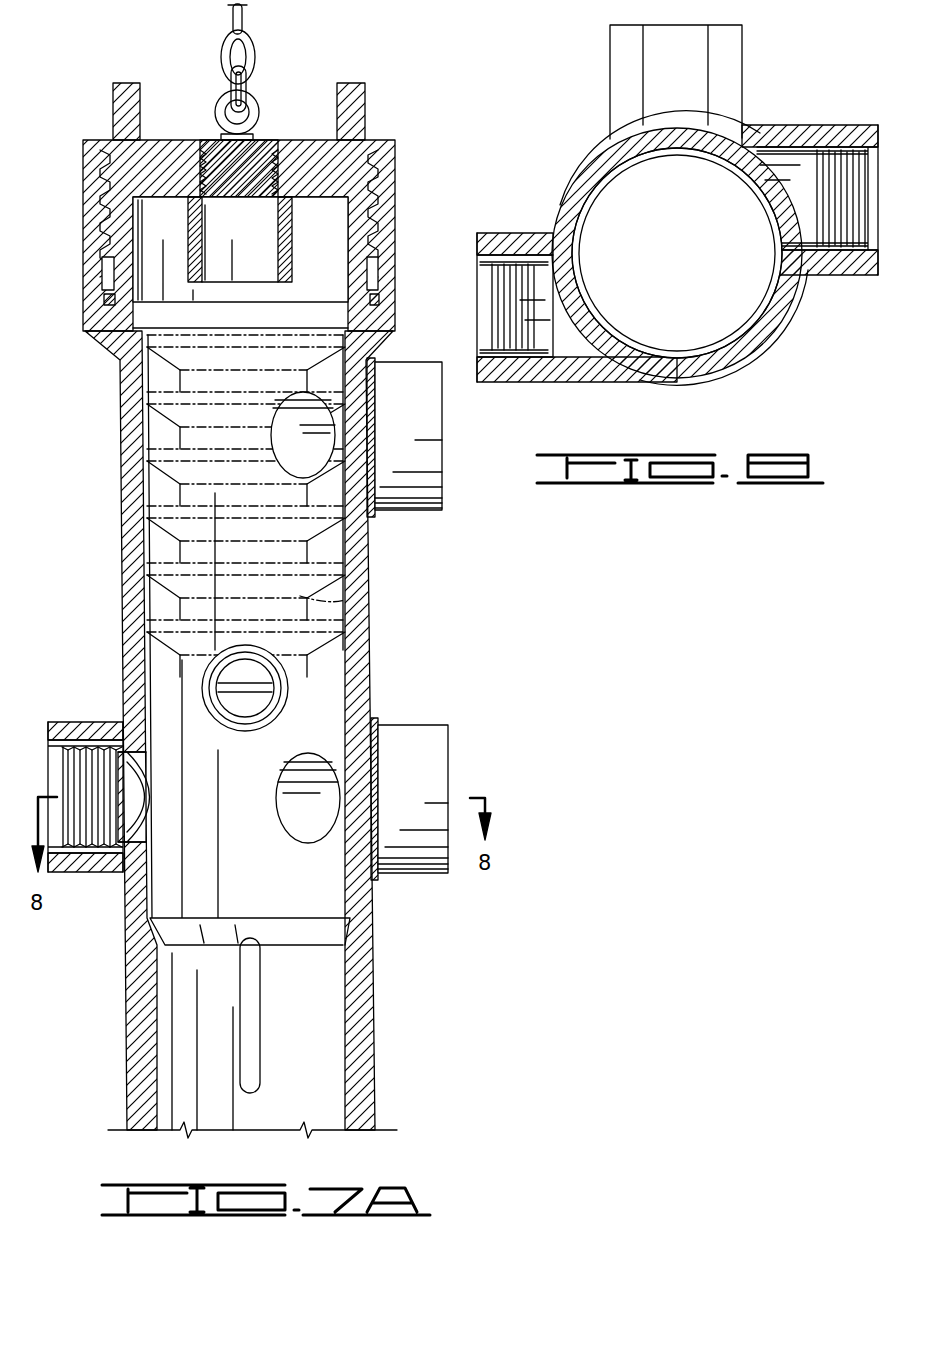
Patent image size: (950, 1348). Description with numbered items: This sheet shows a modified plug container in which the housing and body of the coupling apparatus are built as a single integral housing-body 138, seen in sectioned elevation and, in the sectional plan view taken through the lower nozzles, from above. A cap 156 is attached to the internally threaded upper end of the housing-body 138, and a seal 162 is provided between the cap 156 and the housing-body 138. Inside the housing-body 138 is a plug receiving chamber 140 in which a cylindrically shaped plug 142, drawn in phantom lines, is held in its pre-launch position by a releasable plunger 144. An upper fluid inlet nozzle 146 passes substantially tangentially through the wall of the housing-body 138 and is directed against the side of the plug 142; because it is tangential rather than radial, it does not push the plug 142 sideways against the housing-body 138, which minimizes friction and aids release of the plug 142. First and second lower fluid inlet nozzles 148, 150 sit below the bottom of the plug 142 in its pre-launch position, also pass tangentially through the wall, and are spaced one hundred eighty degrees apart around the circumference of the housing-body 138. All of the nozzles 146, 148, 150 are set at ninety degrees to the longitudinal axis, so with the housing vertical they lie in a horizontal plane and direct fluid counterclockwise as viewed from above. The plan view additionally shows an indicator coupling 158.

In FIG. 7A, the housing-body member 138 is at (356, 1034).
In FIG. 8, the housing-body member 138 is at (603, 172).
In FIG. 7A, the plug receiving chamber 140 is at (327, 545).
In FIG. 7A, the plug 142 is at (317, 598).
In FIG. 7A, the releasable plunger 144 is at (262, 700).
In FIG. 7A, the upper fluid inlet nozzle 146 is at (411, 368).
In FIG. 7A, the first lower fluid inlet nozzle 148 is at (414, 736).
In FIG. 8, the first lower fluid inlet nozzle 148 is at (811, 127).
In FIG. 7A, the second lower fluid inlet nozzle 150 is at (75, 720).
In FIG. 8, the second lower fluid inlet nozzle 150 is at (505, 235).
In FIG. 7A, the cap 156 is at (133, 189).
In FIG. 8, the indicator coupling 158 is at (693, 72).
In FIG. 7A, the seal 162 is at (100, 310).